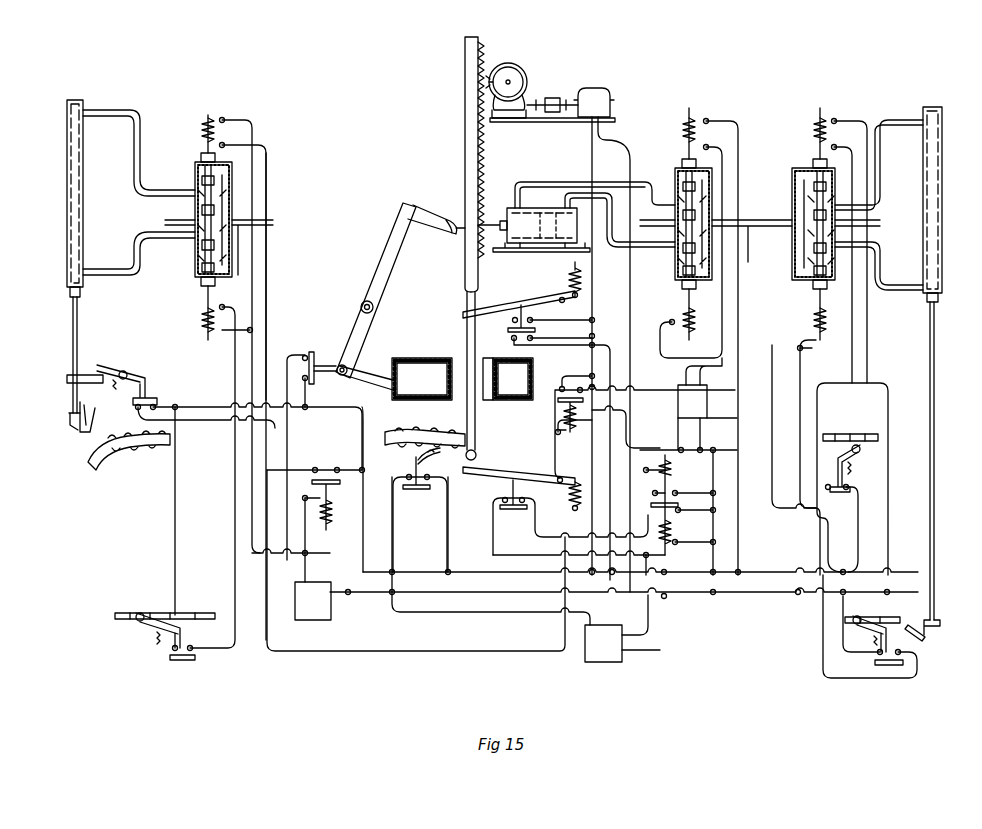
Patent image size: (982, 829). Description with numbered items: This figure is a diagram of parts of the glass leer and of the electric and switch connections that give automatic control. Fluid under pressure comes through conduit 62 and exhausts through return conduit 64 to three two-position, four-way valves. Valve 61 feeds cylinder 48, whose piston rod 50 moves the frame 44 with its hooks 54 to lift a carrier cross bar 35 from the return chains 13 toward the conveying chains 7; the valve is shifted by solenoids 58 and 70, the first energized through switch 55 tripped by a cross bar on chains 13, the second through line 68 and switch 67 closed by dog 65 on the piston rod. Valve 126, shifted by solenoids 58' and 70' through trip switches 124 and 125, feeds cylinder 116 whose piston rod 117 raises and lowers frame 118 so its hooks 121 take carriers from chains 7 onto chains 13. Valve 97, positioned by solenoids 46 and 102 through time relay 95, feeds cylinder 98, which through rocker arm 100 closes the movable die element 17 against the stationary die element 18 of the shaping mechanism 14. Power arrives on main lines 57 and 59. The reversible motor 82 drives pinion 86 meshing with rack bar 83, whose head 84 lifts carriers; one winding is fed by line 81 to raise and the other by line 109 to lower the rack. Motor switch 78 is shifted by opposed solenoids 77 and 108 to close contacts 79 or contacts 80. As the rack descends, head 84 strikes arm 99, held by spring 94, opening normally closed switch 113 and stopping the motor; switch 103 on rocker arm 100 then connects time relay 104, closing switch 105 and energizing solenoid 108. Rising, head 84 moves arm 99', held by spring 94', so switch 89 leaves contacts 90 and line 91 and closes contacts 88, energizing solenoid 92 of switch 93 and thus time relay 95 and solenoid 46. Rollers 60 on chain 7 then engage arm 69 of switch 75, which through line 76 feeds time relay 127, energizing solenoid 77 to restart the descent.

The link belt chains 7 is at (88, 458).
The return belt chains 13 is at (132, 612).
The glass shaping mechanism 14 is at (456, 344).
The die element 17 is at (405, 358).
The die element 18 is at (497, 400).
The cross bar 35 is at (202, 613).
The vertically reciprocable frame 44 is at (68, 415).
The solenoid 46 is at (694, 318).
The cylinder 48 is at (67, 214).
The piston rod 50 is at (73, 338).
The hooks 54 is at (92, 412).
The normally open switch 55 is at (182, 660).
The main line 57 is at (197, 407).
The solenoid 58 is at (188, 320).
The solenoid 58' is at (831, 346).
The main line 59 is at (757, 592).
The rollers 60 is at (832, 434).
The two-position four-way valve 61 is at (195, 183).
The conduit 62 is at (165, 222).
The return conduit 64 is at (251, 260).
The dog 65 is at (83, 375).
The normally open switch 67 is at (133, 375).
The line 68 is at (268, 254).
The operating arm 69 is at (437, 459).
The solenoid 70 is at (189, 130).
The solenoid 70' is at (803, 130).
The normally open switch 75 is at (412, 460).
The line 76 is at (395, 538).
The solenoid 77 is at (670, 538).
The solenoid operated motor switch 78 is at (668, 525).
The contacts 79 is at (680, 512).
The contacts 80 is at (677, 490).
The line 81 is at (632, 310).
The reversible electric motor 82 is at (597, 92).
The rack bar 83 is at (465, 150).
The head 84 is at (477, 453).
The pinion 86 is at (493, 70).
The contacts 88 is at (518, 320).
The switch 89 is at (512, 322).
The contacts 90 is at (512, 345).
The line 91 is at (579, 367).
The solenoid 92 is at (572, 435).
The switch 93 is at (556, 402).
The spring 94 is at (564, 497).
The spring 94' is at (563, 278).
The time relay 95 is at (683, 388).
The two-position four-way valve 97 is at (675, 175).
The cylinder 98 is at (532, 243).
The operating arm 99 is at (519, 465).
The operating arm 99' is at (519, 296).
The rocker arm 100 is at (385, 262).
The solenoid 102 is at (684, 135).
The switch 103 is at (311, 352).
The time relay 104 is at (316, 605).
The switch 105 is at (332, 482).
The solenoid 108 is at (662, 458).
The line 109 is at (630, 292).
The normally closed switch 113 is at (508, 488).
The cylinder 116 is at (935, 220).
The piston rod 117 is at (935, 396).
The vertically movable frame 118 is at (935, 620).
The hooks 121 is at (925, 641).
The normally open trip switch 124 is at (875, 663).
The normally open switch 125 is at (852, 455).
The two-position four-way valve 126 is at (792, 180).
The time relay 127 is at (612, 655).